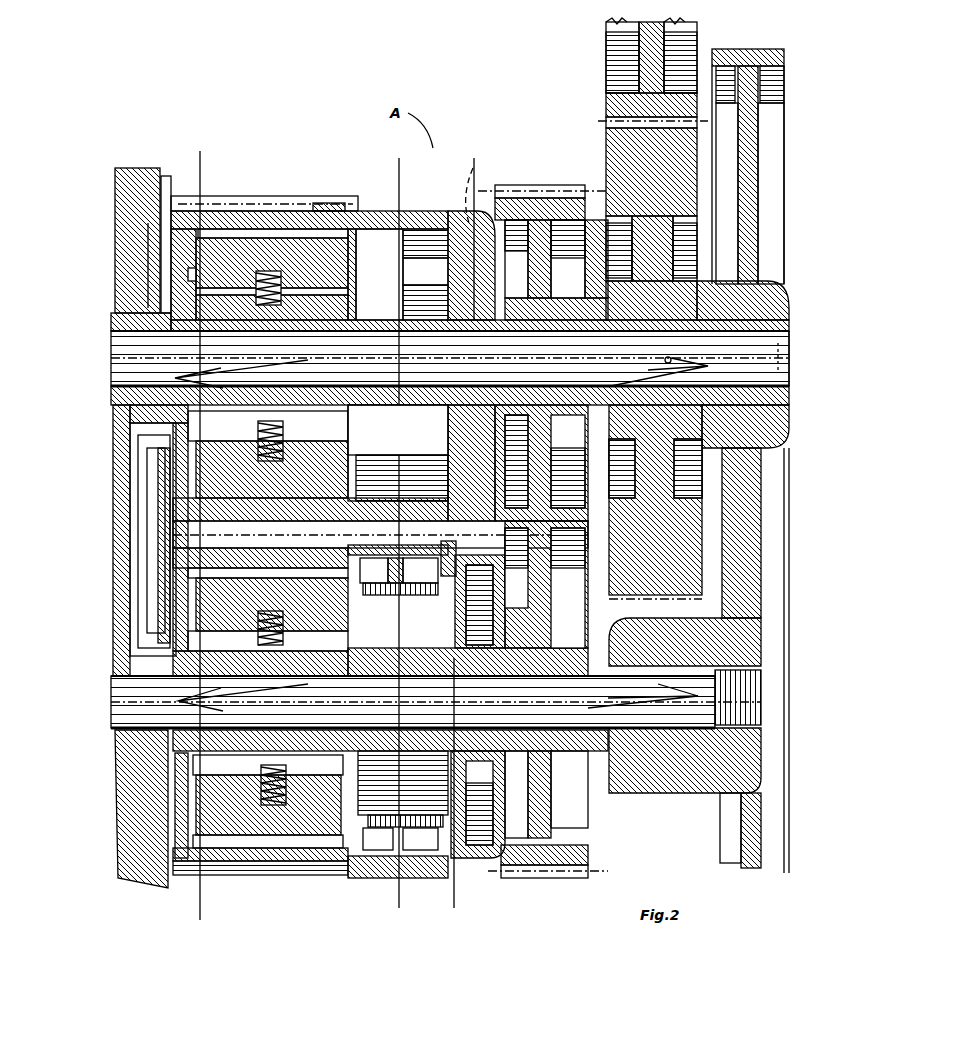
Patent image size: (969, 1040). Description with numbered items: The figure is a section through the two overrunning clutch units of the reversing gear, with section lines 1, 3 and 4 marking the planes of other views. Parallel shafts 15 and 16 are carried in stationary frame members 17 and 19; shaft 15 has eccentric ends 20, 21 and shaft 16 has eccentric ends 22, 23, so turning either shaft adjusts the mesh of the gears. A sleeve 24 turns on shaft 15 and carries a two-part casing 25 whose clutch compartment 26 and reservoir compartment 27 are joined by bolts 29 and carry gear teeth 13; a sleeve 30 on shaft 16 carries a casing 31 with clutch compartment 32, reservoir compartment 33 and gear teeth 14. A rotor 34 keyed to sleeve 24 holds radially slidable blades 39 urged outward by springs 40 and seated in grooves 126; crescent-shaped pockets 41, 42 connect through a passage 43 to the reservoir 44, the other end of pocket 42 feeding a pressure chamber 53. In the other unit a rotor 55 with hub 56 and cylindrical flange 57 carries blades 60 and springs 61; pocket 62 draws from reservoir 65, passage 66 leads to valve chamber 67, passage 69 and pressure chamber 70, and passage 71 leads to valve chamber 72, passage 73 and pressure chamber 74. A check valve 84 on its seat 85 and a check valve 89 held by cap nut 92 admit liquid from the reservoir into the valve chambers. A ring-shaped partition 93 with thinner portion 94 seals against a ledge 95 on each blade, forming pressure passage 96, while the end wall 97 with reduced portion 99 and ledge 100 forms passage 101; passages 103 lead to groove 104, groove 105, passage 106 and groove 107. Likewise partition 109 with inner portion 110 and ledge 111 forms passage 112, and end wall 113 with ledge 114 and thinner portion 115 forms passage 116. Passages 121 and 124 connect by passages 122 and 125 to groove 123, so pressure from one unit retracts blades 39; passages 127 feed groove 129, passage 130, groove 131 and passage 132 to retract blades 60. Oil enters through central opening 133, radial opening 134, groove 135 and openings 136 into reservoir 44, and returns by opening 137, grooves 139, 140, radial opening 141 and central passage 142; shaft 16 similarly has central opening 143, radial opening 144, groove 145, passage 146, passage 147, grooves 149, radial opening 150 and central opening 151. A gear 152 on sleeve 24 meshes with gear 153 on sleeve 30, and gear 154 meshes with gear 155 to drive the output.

The section line 1 is at (184, 151).
The section line 3 is at (399, 163).
The section line 4 is at (474, 163).
The gear 13 is at (205, 190).
The gear 14 is at (233, 868).
The shaft 15 is at (818, 349).
The shaft 16 is at (602, 706).
The stationary frame member 17 is at (128, 200).
The stationary frame member 19 is at (742, 252).
The eccentric end 20 is at (103, 366).
The eccentric end 21 is at (770, 372).
The eccentric end 22 is at (105, 720).
The eccentric end 23 is at (725, 681).
The sleeve 24 is at (140, 300).
The two-part casing 25 is at (332, 195).
The clutch compartment 26 is at (280, 205).
The reservoir compartment 27 is at (398, 208).
The bolts 29 is at (310, 203).
The sleeve 30 is at (604, 652).
The casing 31 is at (320, 855).
The clutch compartment 32 is at (250, 862).
The reservoir compartment 33 is at (380, 845).
The rotor 34 is at (385, 300).
The radially slidable blades 39 is at (242, 257).
The springs 40 is at (252, 265).
The crescent-shaped pocket 41 is at (290, 225).
The crescent-shaped pocket 42 is at (125, 520).
The passage 43 is at (348, 217).
The reservoir 44 is at (422, 232).
The pressure chamber 53 is at (472, 187).
The rotor 55 is at (165, 752).
The hub 56 is at (320, 720).
The cylindrical flange 57 is at (110, 850).
The blades 60 is at (290, 575).
The spring means 61 is at (250, 845).
The crescent-shaped pocket 62 is at (150, 578).
The reservoir 65 is at (430, 612).
The passage 66 is at (340, 558).
The valve chamber 67 is at (434, 560).
The passage 69 is at (465, 600).
The pressure chamber 70 is at (508, 590).
The passage 71 is at (345, 852).
The valve chamber 72 is at (385, 852).
The passage 73 is at (450, 830).
The pressure chamber 74 is at (472, 790).
The check valve 84 is at (440, 590).
The valve seat 85 is at (445, 556).
The check valve 89 is at (398, 814).
The cap nut 92 is at (432, 852).
The ring-shaped partition 93 is at (352, 262).
The thinner inner portion 94 is at (335, 260).
The ledge 95 is at (342, 285).
The pressure chamber and passage 96 is at (372, 258).
The end wall 97 is at (140, 215).
The inner portion of reduced thickness 99 is at (163, 255).
The ledge 100 is at (200, 285).
The pressure chamber and passage 101 is at (153, 205).
The passages 103 is at (160, 280).
The ring-shaped groove 104 is at (163, 290).
The groove 105 is at (120, 420).
The passage 106 is at (150, 470).
The ring-shaped groove 107 is at (103, 688).
The ring-shaped partition 109 is at (428, 580).
The inner portion 110 is at (350, 615).
The ledge 111 is at (352, 635).
The ring-shaped passage 112 is at (378, 590).
The end wall 113 is at (165, 822).
The ledge 114 is at (210, 690).
The thinner portion 115 is at (160, 800).
The pressure chamber or passage 116 is at (160, 620).
The passage 121 is at (130, 596).
The connecting passage 122 is at (165, 605).
The circular groove 123 is at (103, 710).
The passage 124 is at (175, 838).
The passage 125 is at (165, 810).
The grooves 126 is at (380, 293).
The passage 127 is at (165, 205).
The groove 129 is at (157, 250).
The passage 130 is at (125, 562).
The ring-shaped groove 131 is at (140, 690).
The passage 132 is at (115, 650).
The central opening 133 is at (105, 358).
The radial opening 134 is at (246, 365).
The external groove 135 is at (290, 370).
The radial openings 136 is at (345, 400).
The opening 137 is at (425, 326).
The external groove 139 is at (536, 356).
The external groove 140 is at (582, 436).
The radial opening 141 is at (745, 395).
The central passage 142 is at (750, 338).
The central opening 143 is at (130, 745).
The radial opening 144 is at (258, 690).
The groove 145 is at (255, 703).
The passage 146 is at (356, 720).
The passage 147 is at (418, 670).
The grooves 149 is at (510, 680).
The radial opening 150 is at (555, 695).
The central opening 151 is at (712, 703).
The gear 152 is at (560, 184).
The gear 153 is at (518, 863).
The gear 154 is at (598, 150).
The gear 155 is at (598, 90).